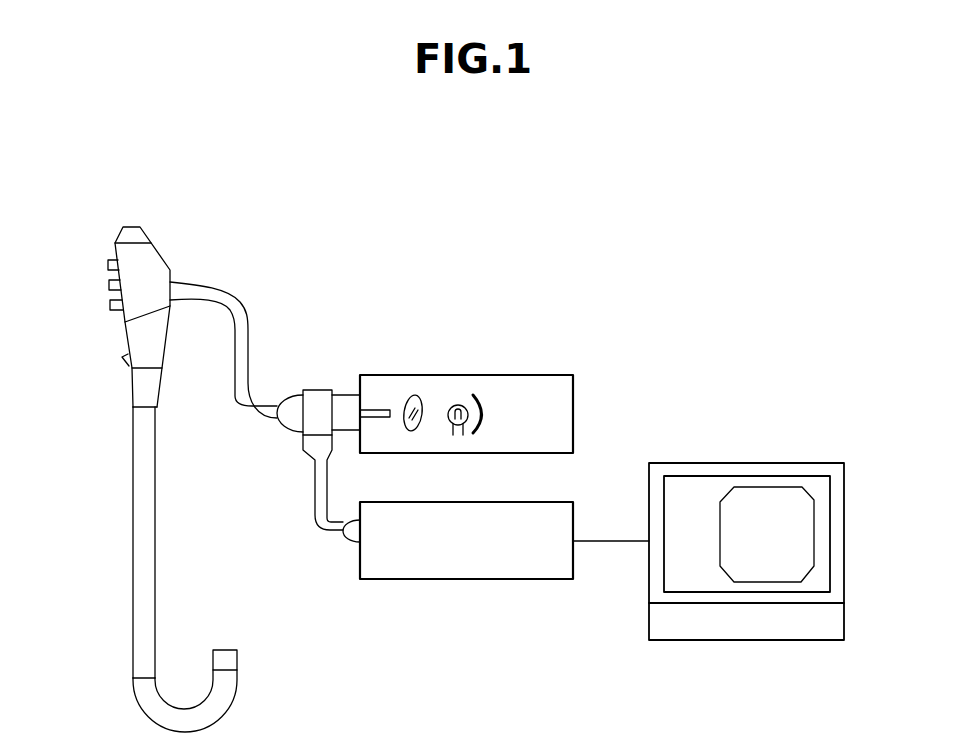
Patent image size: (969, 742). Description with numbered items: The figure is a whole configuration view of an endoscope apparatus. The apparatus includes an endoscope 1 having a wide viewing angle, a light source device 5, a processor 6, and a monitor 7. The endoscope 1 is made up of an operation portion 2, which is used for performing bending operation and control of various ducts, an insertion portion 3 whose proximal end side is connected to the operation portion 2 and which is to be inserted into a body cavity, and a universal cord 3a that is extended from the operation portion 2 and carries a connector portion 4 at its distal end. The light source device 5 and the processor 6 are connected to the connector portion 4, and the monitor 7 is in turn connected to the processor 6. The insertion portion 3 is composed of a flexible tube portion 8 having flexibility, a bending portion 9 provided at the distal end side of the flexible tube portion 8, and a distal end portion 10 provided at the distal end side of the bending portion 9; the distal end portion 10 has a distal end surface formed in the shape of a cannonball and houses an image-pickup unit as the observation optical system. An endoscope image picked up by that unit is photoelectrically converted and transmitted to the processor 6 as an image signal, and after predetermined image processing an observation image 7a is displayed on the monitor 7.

The endoscope 1 is at (222, 230).
The operation portion 2 is at (154, 302).
The insertion portion 3 is at (176, 569).
The universal cord 3a is at (248, 310).
The connector portion 4 is at (292, 417).
The light source device 5 is at (443, 375).
The processor 6 is at (467, 580).
The monitor 7 is at (782, 517).
The observation image 7a is at (822, 490).
The flexible tube portion 8 is at (157, 537).
The bending portion 9 is at (231, 712).
The distal end portion 10 is at (238, 657).